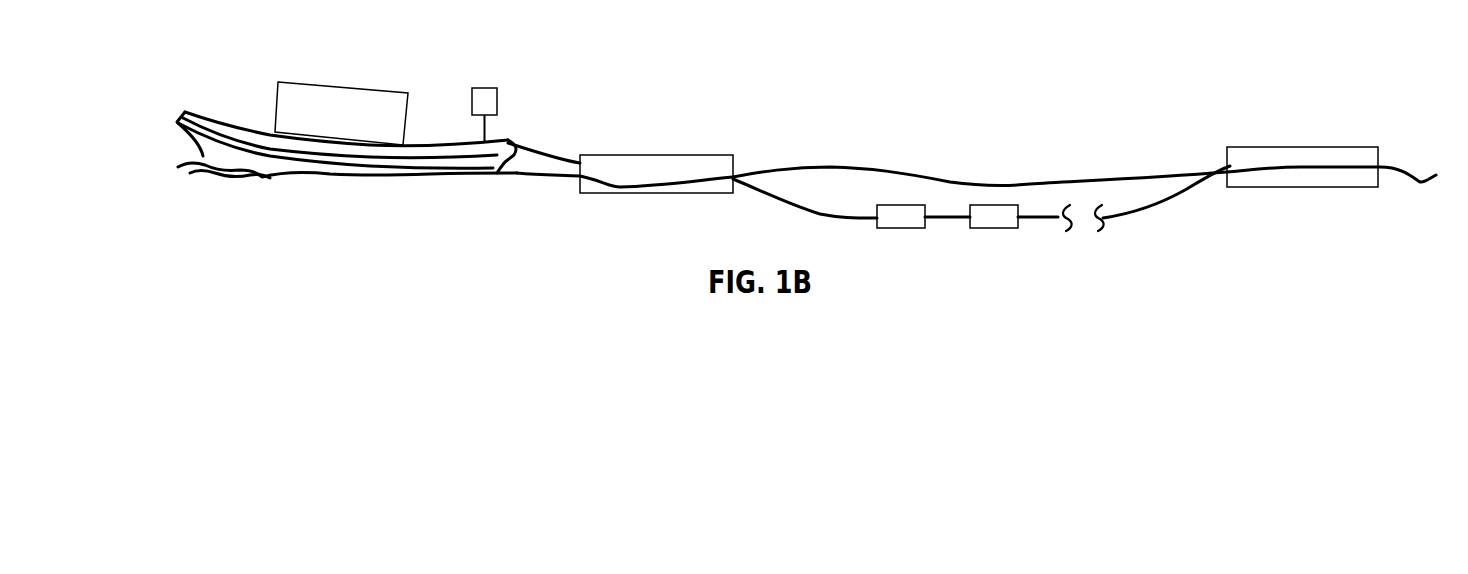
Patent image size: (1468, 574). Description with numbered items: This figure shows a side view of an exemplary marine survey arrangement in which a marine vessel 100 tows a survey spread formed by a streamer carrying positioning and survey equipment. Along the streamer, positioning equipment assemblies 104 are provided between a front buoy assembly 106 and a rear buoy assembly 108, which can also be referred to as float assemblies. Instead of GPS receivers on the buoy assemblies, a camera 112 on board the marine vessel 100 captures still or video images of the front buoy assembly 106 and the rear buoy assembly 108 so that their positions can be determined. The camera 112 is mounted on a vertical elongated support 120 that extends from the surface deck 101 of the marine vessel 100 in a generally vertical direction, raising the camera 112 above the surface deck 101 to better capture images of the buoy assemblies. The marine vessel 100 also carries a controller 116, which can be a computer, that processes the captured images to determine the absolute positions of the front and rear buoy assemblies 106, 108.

The marine vessel 100 is at (187, 140).
The surface deck 101 is at (215, 110).
The positioning equipment assemblies 104 is at (900, 205).
The front buoy assembly 106 is at (635, 153).
The rear buoy assembly 108 is at (1282, 147).
The camera 112 is at (493, 86).
The controller 116 is at (327, 83).
The vertical elongated support 120 is at (487, 130).